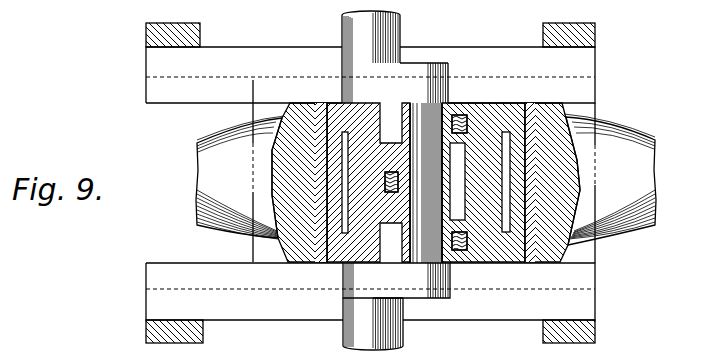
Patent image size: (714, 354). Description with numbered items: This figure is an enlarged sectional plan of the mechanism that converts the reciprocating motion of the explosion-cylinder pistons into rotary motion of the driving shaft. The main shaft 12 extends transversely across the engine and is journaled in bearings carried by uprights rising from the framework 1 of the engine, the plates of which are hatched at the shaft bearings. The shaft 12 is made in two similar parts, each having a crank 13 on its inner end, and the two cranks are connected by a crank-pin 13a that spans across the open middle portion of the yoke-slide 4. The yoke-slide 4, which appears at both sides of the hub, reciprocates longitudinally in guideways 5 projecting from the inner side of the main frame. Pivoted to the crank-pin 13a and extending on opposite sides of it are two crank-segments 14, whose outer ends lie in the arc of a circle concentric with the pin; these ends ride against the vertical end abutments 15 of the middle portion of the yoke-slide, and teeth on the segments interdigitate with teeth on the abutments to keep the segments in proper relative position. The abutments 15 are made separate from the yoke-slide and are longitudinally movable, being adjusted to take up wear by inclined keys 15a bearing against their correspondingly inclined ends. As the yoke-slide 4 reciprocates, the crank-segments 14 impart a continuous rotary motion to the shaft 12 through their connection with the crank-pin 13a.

The framework of the engine 1 is at (597, 30).
The yoke-slide 4 is at (426, 179).
The guideways 5 is at (160, 88).
The main shaft 12 is at (360, 33).
The crank 13 is at (426, 63).
The crank-pin 13a is at (427, 133).
The crank-segments 14 is at (357, 247).
The end abutments 15 is at (333, 110).
The inclined keys 15a is at (536, 110).